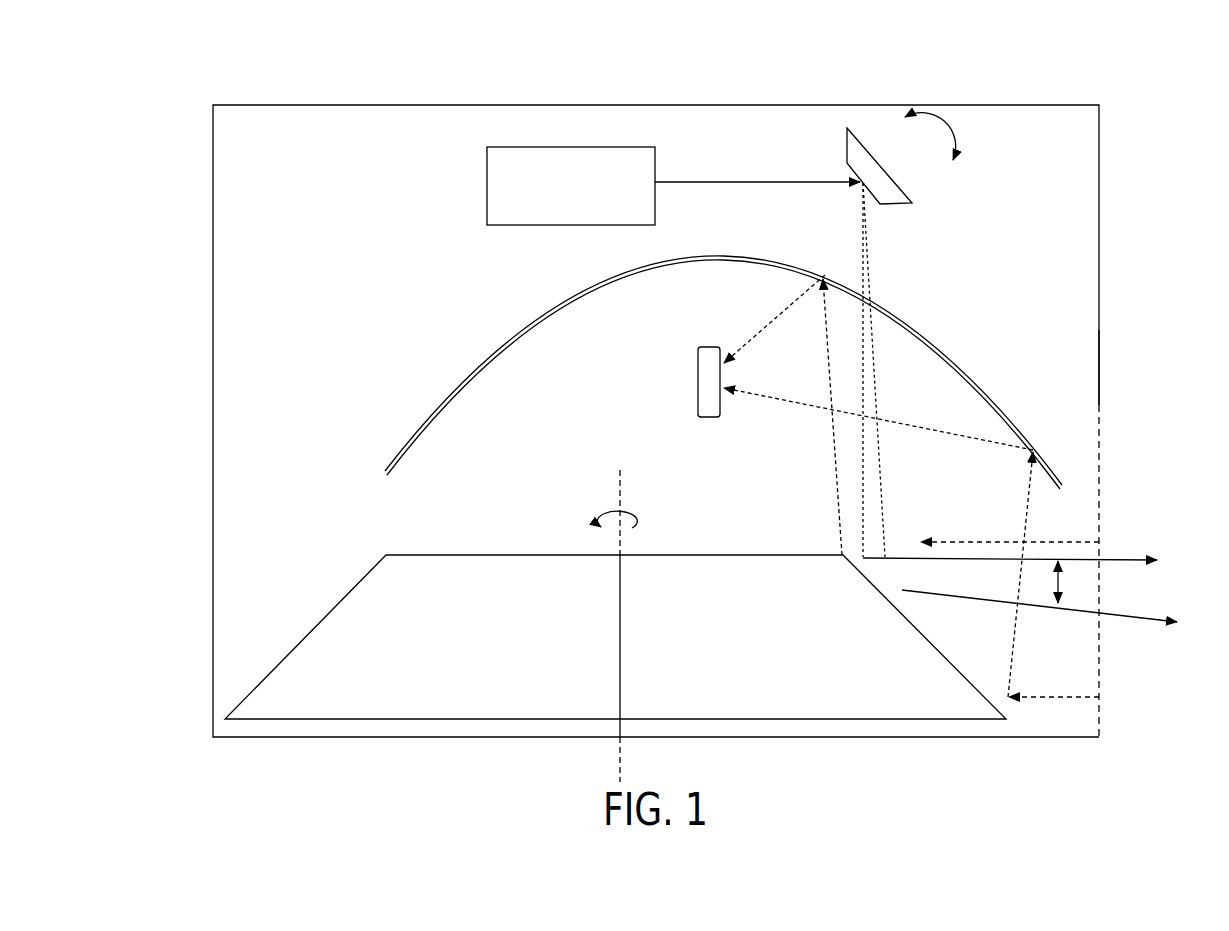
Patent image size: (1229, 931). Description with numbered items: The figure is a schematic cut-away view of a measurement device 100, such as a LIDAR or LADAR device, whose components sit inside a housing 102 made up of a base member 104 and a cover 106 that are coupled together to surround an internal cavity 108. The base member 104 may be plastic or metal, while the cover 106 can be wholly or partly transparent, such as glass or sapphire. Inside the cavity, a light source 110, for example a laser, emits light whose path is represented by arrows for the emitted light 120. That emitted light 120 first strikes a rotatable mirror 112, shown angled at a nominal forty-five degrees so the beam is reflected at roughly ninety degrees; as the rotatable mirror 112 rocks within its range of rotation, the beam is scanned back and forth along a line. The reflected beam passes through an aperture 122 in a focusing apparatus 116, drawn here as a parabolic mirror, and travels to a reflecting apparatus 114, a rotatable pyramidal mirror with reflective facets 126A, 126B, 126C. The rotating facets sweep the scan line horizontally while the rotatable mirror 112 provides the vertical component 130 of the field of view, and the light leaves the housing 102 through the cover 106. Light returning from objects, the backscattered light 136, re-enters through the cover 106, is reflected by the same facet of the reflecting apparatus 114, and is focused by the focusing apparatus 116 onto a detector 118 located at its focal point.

The measurement device 100 is at (203, 111).
The housing 102 is at (1160, 378).
The base member 104 is at (1100, 403).
The cover 106 is at (1100, 440).
The internal cavity 108 is at (282, 199).
The light source 110 is at (581, 199).
The rotatable mirror 112 is at (876, 161).
The reflecting apparatus 114 is at (483, 553).
The focusing apparatus 116 is at (566, 305).
The detector 118 is at (710, 346).
The emitted light 120 is at (732, 181).
The aperture 122 is at (877, 293).
The facet 126A is at (957, 629).
The facet 126B is at (717, 644).
The facet 126C is at (457, 654).
The vertical component 130 is at (1055, 582).
The backscattered light 136 is at (970, 541).